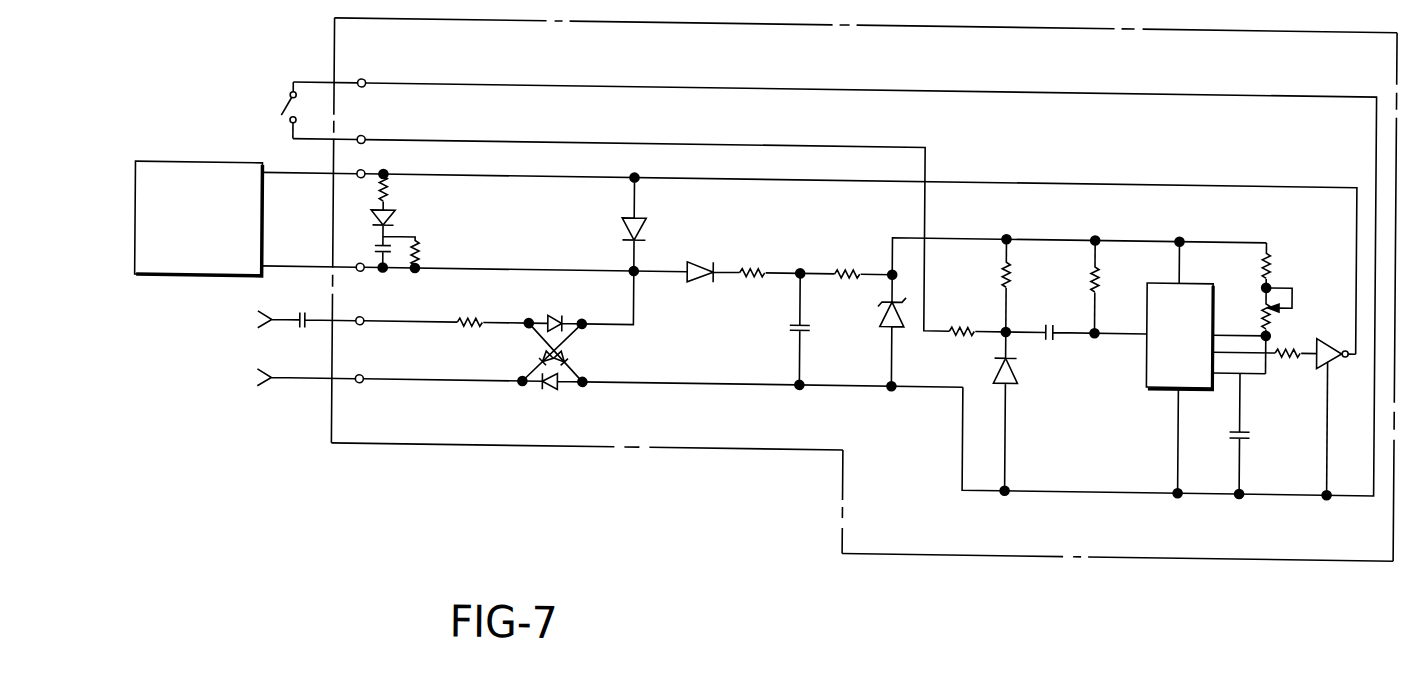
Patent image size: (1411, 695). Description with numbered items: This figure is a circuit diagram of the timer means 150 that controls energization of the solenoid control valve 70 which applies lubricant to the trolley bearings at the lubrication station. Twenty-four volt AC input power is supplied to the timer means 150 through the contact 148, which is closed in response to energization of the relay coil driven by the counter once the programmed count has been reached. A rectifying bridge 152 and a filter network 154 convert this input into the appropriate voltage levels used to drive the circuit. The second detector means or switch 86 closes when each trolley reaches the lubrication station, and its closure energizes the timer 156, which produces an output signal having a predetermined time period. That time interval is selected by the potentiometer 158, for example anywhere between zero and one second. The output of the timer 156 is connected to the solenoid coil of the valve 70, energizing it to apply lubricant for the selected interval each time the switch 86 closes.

The control valve 70 is at (198, 140).
The second detector means 86 is at (279, 108).
The contact 148 is at (268, 317).
The timer means 150 is at (800, 526).
The rectifying bridge 152 is at (566, 386).
The filter network 154 is at (832, 372).
The timer 156 is at (1150, 374).
The potentiometer 158 is at (1267, 299).